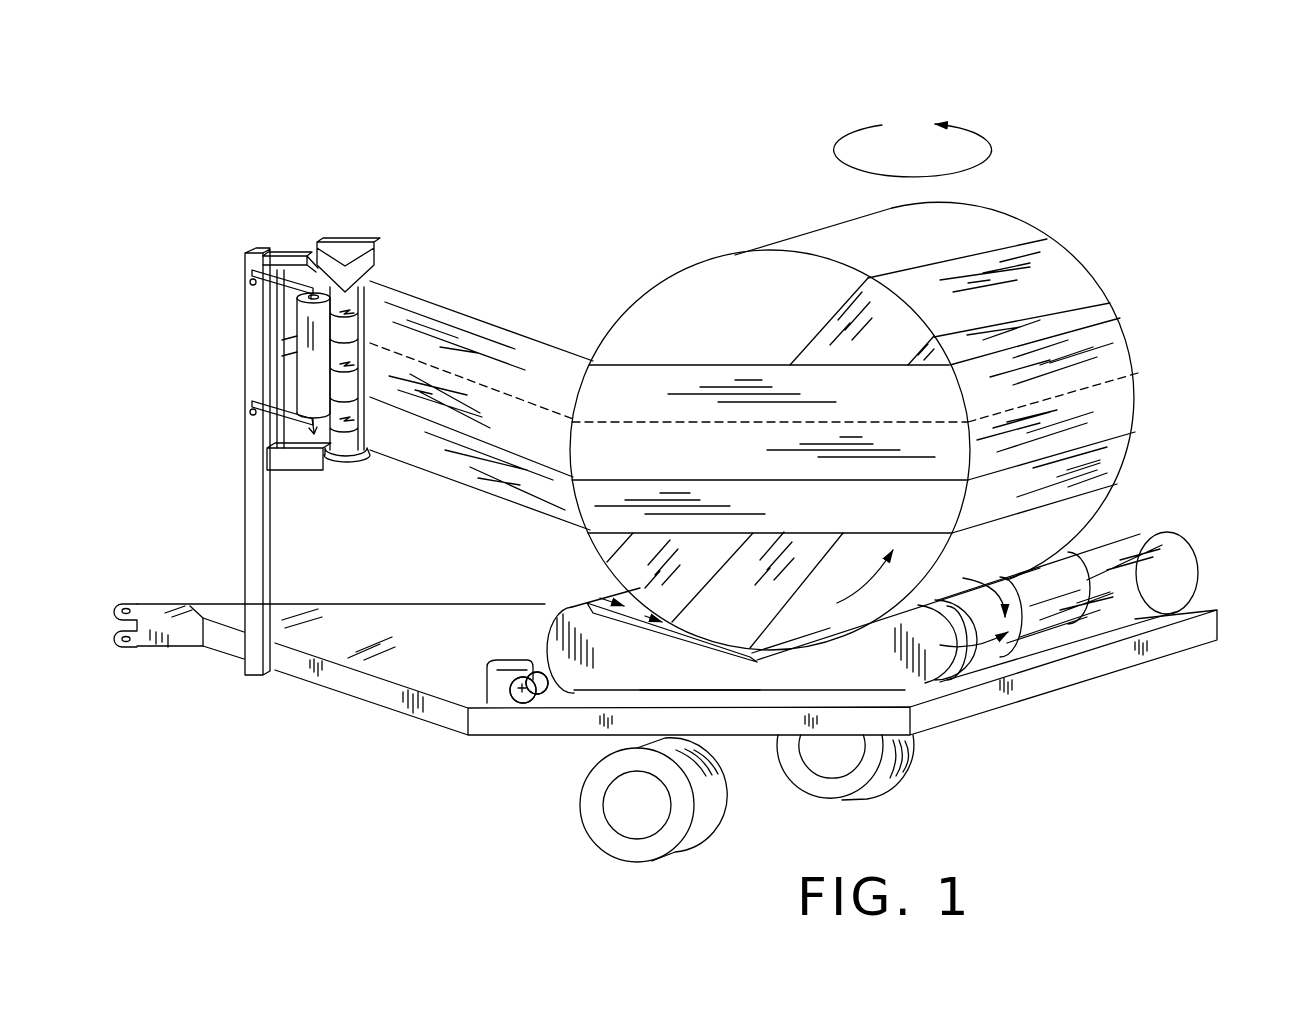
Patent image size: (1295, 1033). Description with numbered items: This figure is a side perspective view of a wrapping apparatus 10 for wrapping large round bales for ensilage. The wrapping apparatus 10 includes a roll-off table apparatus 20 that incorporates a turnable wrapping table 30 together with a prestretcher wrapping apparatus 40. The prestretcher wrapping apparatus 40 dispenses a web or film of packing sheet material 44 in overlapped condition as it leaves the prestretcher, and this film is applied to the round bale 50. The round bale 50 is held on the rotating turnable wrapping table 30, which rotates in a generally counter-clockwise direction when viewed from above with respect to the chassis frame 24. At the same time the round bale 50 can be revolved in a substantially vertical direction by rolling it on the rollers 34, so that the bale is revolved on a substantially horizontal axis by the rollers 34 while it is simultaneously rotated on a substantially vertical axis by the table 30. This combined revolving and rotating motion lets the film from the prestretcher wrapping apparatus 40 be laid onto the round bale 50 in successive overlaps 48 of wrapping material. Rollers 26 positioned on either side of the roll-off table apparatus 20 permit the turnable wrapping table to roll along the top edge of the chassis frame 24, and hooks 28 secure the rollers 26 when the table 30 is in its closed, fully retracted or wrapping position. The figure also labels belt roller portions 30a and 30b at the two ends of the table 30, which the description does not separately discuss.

The wrapping apparatus 10 is at (597, 100).
The roll-off table apparatus 20 is at (575, 590).
The chassis frame 24 is at (592, 732).
The rollers 26 is at (528, 705).
The hooks 28 is at (487, 692).
The turnable wrapping table 30 is at (792, 675).
The first belt roller 30a is at (560, 625).
The second belt roller 30b is at (932, 678).
The rollers 34 is at (1198, 563).
The prestretcher wrapping apparatus 40 is at (335, 242).
The packing sheet material 44 is at (470, 310).
The successive overlaps 48 is at (1075, 230).
The round bale 50 is at (850, 217).